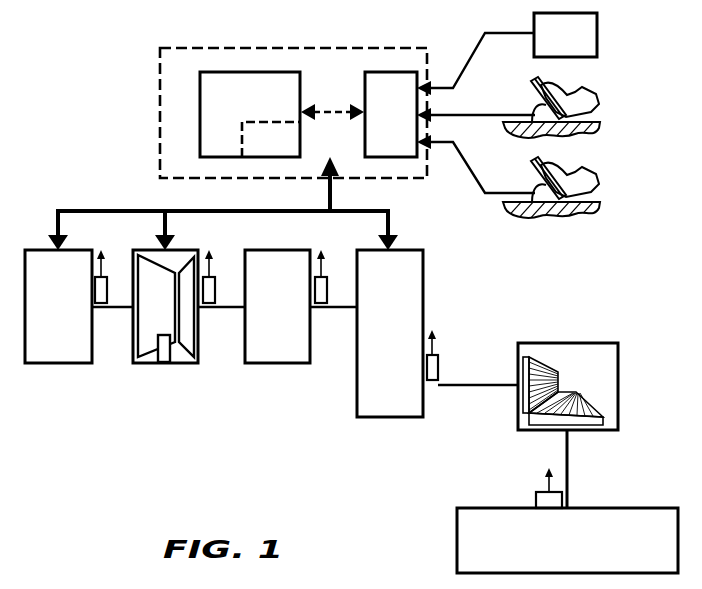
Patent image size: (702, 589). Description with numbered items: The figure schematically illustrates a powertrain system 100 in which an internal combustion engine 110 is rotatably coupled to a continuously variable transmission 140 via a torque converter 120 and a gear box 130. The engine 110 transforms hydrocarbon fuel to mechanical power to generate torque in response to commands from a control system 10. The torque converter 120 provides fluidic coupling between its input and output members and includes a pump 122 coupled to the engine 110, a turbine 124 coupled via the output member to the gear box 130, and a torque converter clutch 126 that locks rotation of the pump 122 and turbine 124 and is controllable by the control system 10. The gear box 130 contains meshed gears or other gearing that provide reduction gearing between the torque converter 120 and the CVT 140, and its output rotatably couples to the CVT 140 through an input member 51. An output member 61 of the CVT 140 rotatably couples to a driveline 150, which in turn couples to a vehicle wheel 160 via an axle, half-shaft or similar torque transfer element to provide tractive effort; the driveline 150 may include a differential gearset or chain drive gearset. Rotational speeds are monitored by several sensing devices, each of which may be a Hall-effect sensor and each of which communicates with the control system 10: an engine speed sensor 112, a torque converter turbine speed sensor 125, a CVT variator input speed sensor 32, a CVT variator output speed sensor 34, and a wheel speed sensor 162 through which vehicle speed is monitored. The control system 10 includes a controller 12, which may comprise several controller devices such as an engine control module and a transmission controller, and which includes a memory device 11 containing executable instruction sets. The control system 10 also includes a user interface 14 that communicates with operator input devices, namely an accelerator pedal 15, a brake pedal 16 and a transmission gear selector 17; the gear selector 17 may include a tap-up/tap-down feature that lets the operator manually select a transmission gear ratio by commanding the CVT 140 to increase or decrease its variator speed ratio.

The powertrain system 100 is at (100, 110).
The control system 10 is at (191, 84).
The controller 12 is at (240, 104).
The memory device 11 is at (285, 152).
The user interface 14 is at (403, 128).
The transmission gear selector 17 is at (579, 49).
The brake pedal 16 is at (537, 114).
The accelerator pedal 15 is at (537, 196).
The internal combustion engine 110 is at (76, 324).
The engine speed sensor 112 is at (107, 291).
The torque converter 120 is at (154, 348).
The pump 122 is at (148, 364).
The turbine 124 is at (183, 364).
The torque converter clutch 126 is at (165, 364).
The torque converter turbine speed sensor 125 is at (215, 291).
The gear box 130 is at (298, 322).
The CVT variator input speed sensor 32 is at (327, 291).
The input member 51 is at (345, 309).
The continuously variable transmission 140 is at (409, 352).
The CVT variator output speed sensor 34 is at (438, 368).
The output member 61 is at (472, 387).
The driveline 150 is at (606, 382).
The vehicle wheel 160 is at (586, 556).
The wheel speed sensor 162 is at (536, 500).